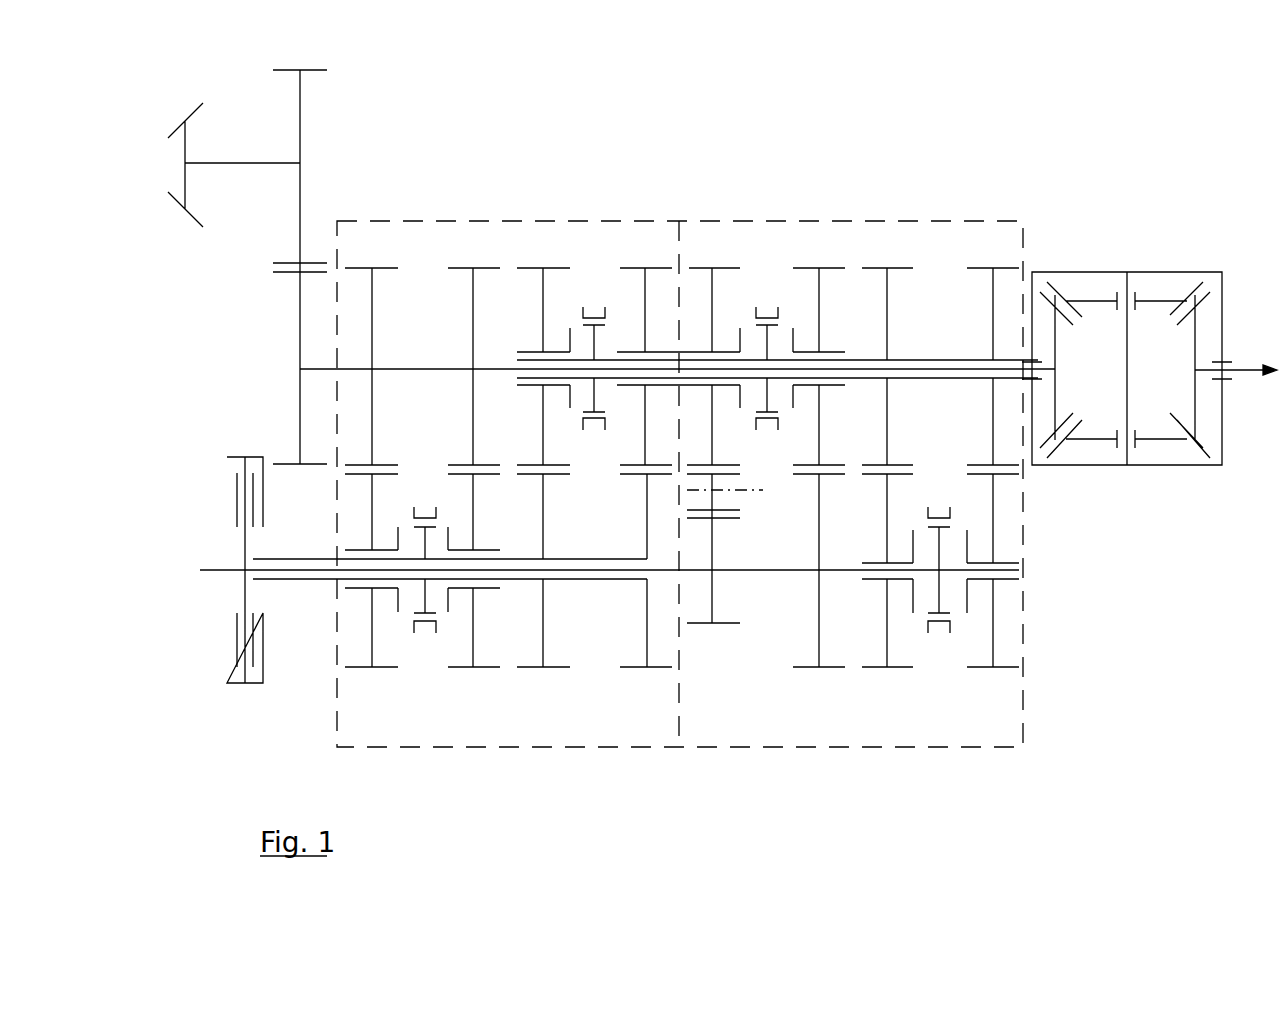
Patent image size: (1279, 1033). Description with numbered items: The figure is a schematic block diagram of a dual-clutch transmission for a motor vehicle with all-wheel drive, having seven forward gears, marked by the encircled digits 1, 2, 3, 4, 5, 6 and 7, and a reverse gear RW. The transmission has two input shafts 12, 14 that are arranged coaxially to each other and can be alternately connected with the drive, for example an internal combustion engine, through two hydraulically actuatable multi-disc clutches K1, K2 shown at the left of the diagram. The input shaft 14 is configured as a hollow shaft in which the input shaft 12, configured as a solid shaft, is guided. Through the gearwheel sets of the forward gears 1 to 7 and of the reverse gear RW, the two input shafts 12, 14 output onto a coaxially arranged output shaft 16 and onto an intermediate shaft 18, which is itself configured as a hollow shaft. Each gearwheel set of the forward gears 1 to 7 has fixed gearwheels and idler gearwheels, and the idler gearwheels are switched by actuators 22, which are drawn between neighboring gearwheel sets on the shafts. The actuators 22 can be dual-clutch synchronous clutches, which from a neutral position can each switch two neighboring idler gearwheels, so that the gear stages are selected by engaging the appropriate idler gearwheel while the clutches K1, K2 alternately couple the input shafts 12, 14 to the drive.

The input shaft 12 is at (780, 573).
The input shaft 14 is at (585, 559).
The output shaft 16 is at (425, 369).
The intermediate shaft 18 is at (930, 360).
The actuators 22 is at (595, 299).
The multi-disc clutch K1 is at (258, 667).
The multi-disc clutch K2 is at (237, 667).
The reverse gear RW is at (725, 596).
The forward gear 1 is at (646, 593).
The forward gear 2 is at (819, 593).
The forward gear 3 is at (543, 593).
The forward gear 4 is at (887, 593).
The forward gear 5 is at (474, 593).
The forward gear 6 is at (993, 593).
The forward gear 7 is at (371, 593).